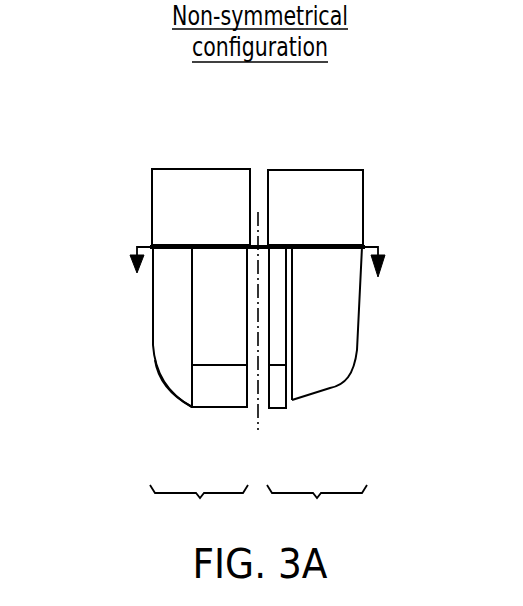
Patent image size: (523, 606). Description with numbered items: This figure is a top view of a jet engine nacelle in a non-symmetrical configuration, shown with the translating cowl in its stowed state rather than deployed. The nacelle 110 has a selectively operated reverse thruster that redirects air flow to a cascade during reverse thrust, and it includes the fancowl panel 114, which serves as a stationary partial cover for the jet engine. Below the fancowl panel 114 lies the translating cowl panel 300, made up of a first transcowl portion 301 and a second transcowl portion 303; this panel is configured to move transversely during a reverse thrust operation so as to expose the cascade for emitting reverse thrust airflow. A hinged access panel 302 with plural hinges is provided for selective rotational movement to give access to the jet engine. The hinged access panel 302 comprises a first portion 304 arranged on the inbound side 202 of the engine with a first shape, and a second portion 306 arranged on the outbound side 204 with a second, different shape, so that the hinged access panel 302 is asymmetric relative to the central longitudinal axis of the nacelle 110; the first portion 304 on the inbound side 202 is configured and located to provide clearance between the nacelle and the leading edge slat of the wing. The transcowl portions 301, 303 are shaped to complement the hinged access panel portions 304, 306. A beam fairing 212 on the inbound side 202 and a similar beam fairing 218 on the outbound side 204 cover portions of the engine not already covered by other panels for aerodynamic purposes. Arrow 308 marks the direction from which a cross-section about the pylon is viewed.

The nacelle 110 is at (397, 170).
The fancowl panel 114 is at (200, 168).
The inbound side 202 is at (199, 509).
The outbound side 204 is at (317, 509).
The beam fairing 212 is at (223, 387).
The beam fairing 218 is at (280, 412).
The translating cowl panel 300 is at (165, 375).
The first transcowl portion 301 is at (173, 341).
The hinged access panel 302 is at (192, 307).
The second transcowl portion 303 is at (332, 330).
The first hinged access panel portion 304 is at (208, 291).
The second hinged access panel portion 306 is at (280, 338).
The arrow 308 is at (365, 247).